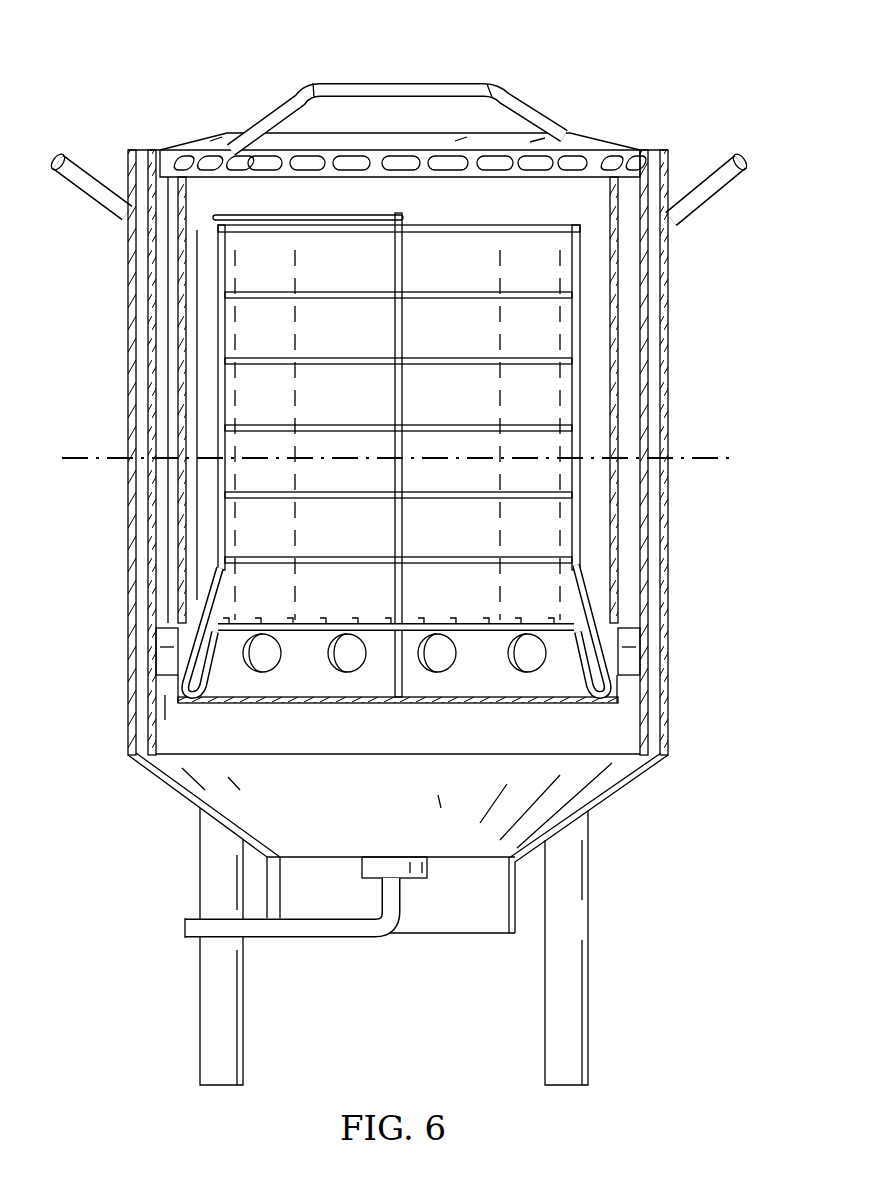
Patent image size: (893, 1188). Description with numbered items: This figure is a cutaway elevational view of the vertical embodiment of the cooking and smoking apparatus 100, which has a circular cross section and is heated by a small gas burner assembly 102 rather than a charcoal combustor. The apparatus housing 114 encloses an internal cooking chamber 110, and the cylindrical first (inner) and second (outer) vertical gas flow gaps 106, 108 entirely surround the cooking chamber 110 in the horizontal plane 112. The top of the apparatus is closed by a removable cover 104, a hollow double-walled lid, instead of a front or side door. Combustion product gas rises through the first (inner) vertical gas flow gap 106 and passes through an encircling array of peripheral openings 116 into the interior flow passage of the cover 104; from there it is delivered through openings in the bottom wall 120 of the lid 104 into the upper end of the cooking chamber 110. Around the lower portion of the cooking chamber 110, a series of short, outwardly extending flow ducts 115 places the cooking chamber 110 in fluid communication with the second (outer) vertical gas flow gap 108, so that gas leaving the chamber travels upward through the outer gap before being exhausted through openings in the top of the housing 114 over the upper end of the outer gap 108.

The cooking and smoking apparatus 100 is at (185, 63).
The gas burner assembly 102 is at (302, 940).
The removable cover 104 is at (508, 130).
The first (inner) vertical gas flow gap 106 is at (170, 318).
The second (outer) vertical gas flow gap 108 is at (140, 578).
The cooking chamber 110 is at (420, 408).
The horizontal plane 112 is at (85, 460).
The apparatus housing 114 is at (128, 410).
The flow ducts 115 is at (352, 642).
The peripheral openings 116 is at (212, 162).
The bottom wall 120 is at (578, 175).